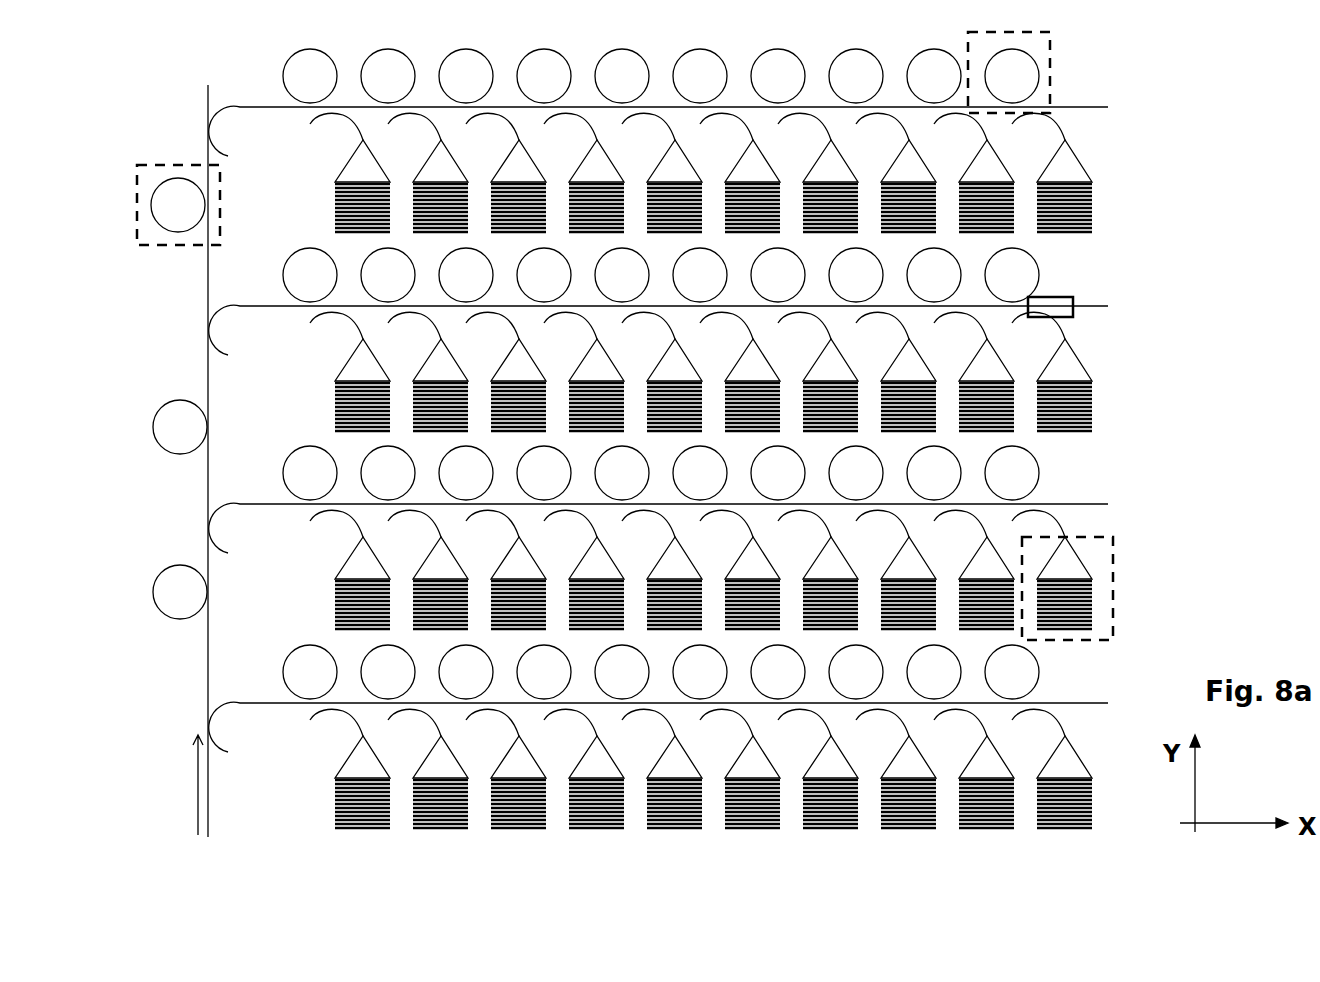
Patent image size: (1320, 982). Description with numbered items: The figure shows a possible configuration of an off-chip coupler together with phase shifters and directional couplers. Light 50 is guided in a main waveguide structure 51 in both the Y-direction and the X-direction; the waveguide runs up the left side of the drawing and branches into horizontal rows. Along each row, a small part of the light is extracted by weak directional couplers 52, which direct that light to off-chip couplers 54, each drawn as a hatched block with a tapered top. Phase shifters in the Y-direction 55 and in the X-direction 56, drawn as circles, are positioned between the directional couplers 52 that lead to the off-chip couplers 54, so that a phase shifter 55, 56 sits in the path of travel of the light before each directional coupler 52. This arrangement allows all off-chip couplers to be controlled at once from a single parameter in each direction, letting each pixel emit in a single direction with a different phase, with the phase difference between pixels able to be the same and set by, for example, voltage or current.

The light 50 is at (173, 785).
The main waveguide structure 51 is at (192, 690).
The weak directional coupler 52 is at (1083, 284).
The off-chip coupler 54 is at (1109, 592).
The phase shifter in Y-direction 55 is at (1062, 80).
The phase shifter in X-direction 56 is at (156, 171).